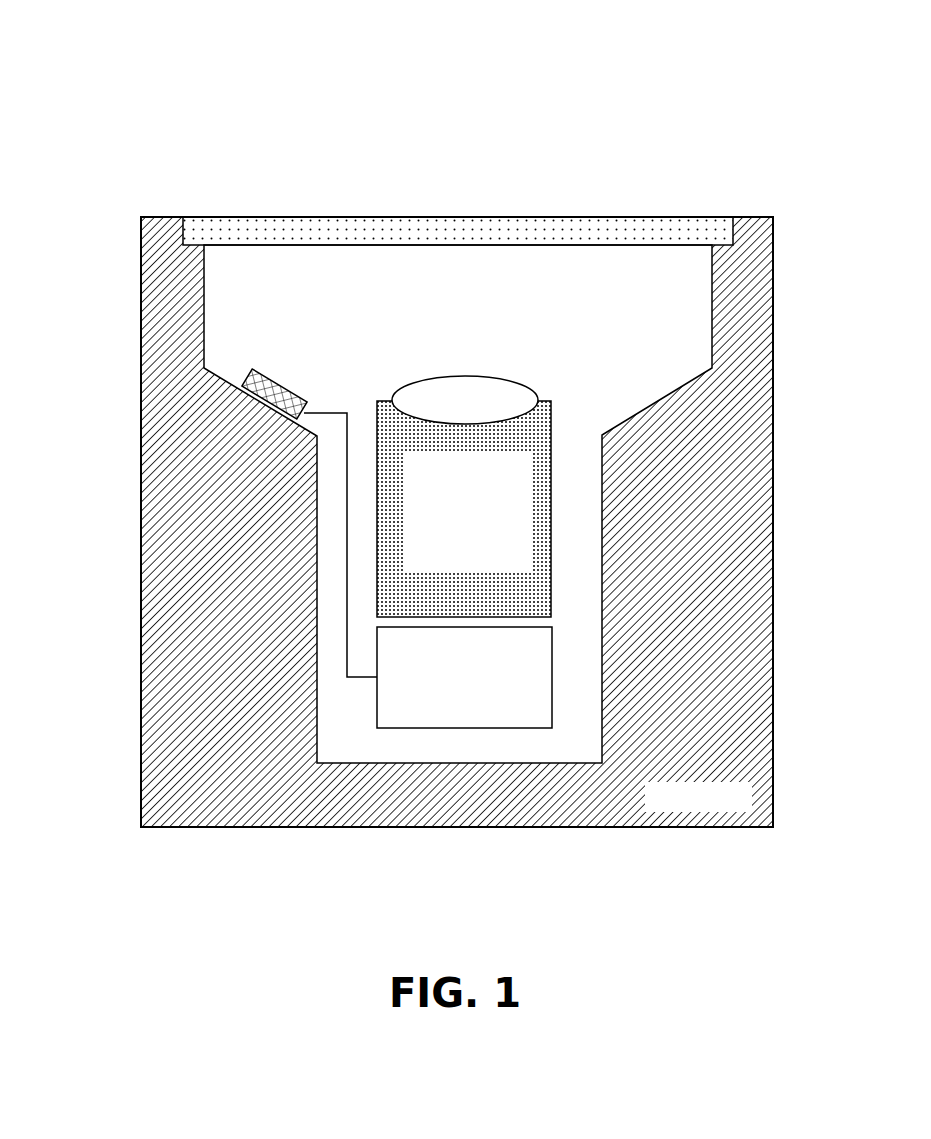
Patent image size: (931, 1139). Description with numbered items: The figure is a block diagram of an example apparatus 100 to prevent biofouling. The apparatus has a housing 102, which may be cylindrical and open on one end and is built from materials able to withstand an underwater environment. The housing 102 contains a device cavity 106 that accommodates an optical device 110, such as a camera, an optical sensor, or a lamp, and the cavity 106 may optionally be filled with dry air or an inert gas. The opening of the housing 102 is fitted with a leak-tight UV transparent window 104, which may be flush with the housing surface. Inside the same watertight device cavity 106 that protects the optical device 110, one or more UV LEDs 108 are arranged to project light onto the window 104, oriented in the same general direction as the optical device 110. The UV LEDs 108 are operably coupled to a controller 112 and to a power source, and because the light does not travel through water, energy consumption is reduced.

The apparatus 100 is at (743, 66).
The housing 102 is at (215, 827).
The UV transparent window 104 is at (682, 228).
The device cavity 106 is at (567, 328).
The UV light emitting diodes 108 is at (272, 398).
The optical device 110 is at (405, 390).
The controller 112 is at (468, 728).